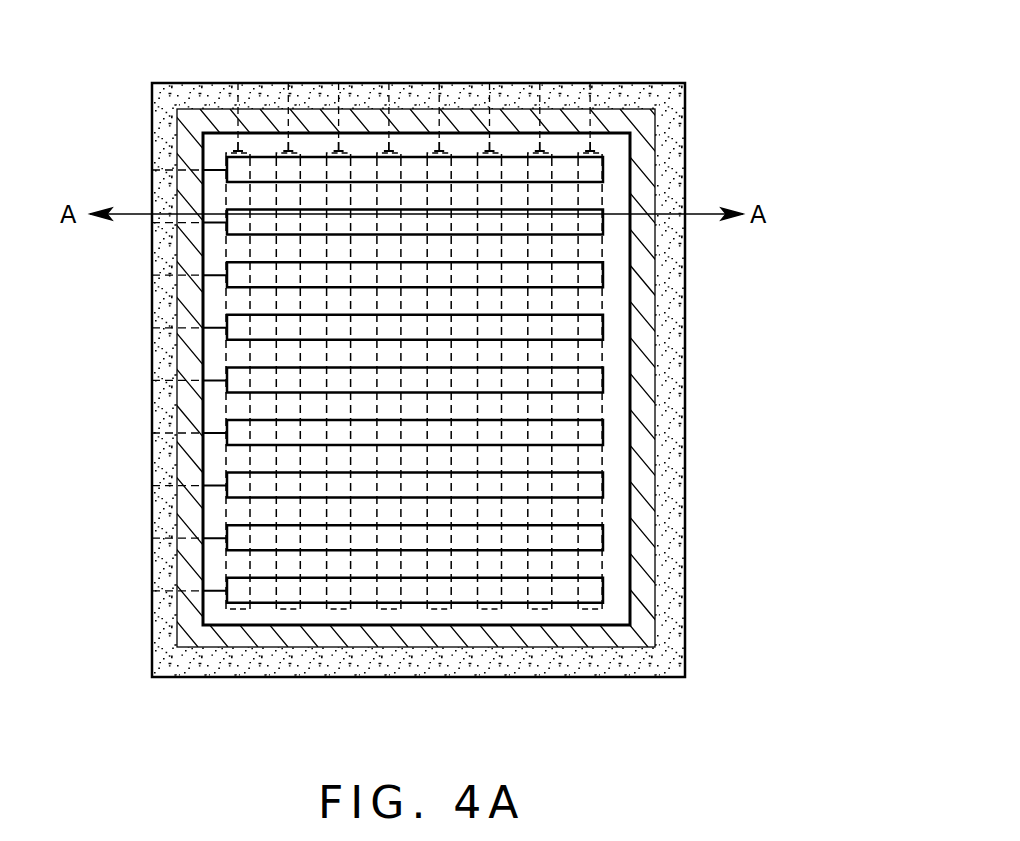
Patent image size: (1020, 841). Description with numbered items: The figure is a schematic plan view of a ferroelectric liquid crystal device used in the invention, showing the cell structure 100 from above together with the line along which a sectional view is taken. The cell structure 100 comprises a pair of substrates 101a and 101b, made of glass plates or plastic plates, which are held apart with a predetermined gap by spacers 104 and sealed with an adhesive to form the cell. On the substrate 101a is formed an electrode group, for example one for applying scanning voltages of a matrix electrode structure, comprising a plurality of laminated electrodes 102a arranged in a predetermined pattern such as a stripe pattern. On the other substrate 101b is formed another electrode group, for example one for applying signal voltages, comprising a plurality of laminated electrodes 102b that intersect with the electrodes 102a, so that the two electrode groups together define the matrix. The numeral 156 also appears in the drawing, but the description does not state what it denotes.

The cell structure 100 is at (458, 78).
The substrate 101a is at (416, 379).
The substrate 101b is at (612, 168).
The laminated electrodes 102a is at (590, 249).
The laminated electrodes 102b is at (313, 162).
The spacers 104 is at (577, 88).
The protective layer 156 is at (663, 551).